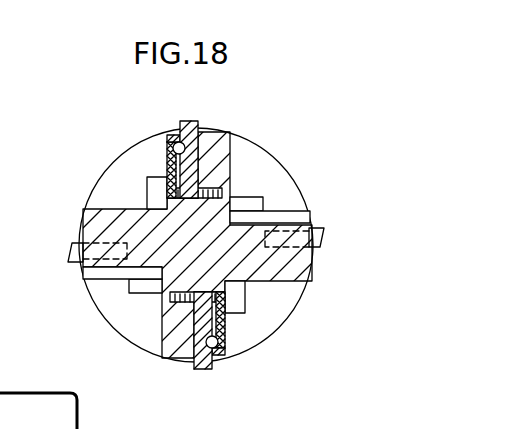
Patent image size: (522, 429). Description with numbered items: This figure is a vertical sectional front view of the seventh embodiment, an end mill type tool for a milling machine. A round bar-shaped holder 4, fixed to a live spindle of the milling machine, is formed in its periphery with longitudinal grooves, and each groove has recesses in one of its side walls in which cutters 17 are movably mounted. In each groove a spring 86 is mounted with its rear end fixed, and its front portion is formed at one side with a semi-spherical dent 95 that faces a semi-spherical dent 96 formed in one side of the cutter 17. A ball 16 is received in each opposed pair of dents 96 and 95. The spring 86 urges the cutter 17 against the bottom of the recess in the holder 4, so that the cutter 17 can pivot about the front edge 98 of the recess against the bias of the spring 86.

The holder 4 is at (285, 189).
The ball 16 is at (229, 346).
The cutter 17 is at (181, 121).
The spring 86 is at (170, 137).
The semi-spherical dent 95 is at (167, 146).
The semi-spherical dent 96 is at (195, 122).
The front edge 98 is at (200, 131).